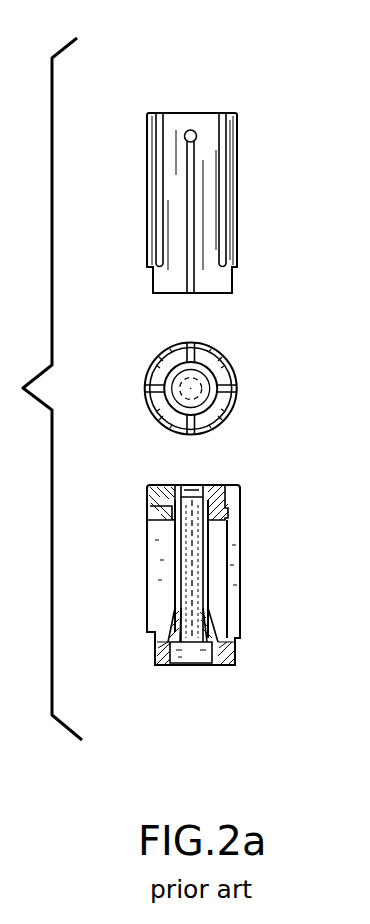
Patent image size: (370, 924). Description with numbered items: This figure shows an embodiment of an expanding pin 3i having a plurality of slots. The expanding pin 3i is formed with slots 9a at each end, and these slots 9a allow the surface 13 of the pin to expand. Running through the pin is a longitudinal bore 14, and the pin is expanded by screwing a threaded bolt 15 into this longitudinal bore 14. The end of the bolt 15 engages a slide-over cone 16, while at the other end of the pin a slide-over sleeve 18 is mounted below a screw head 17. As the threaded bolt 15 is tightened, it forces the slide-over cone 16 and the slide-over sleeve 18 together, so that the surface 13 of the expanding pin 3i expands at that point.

The expanding pin 3i is at (212, 100).
The slots 9a is at (220, 192).
The surface 13 is at (213, 229).
The longitudinal bore 14 is at (207, 557).
The bolt 15 is at (210, 620).
The slide-over cone 16 is at (213, 500).
The screw head 17 is at (210, 665).
The slide-over sleeve 18 is at (152, 632).